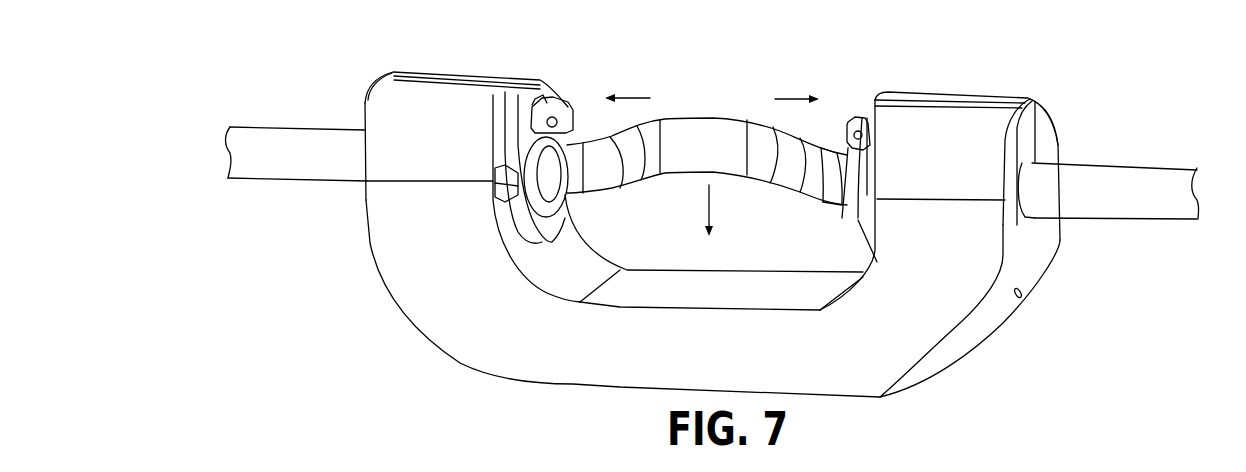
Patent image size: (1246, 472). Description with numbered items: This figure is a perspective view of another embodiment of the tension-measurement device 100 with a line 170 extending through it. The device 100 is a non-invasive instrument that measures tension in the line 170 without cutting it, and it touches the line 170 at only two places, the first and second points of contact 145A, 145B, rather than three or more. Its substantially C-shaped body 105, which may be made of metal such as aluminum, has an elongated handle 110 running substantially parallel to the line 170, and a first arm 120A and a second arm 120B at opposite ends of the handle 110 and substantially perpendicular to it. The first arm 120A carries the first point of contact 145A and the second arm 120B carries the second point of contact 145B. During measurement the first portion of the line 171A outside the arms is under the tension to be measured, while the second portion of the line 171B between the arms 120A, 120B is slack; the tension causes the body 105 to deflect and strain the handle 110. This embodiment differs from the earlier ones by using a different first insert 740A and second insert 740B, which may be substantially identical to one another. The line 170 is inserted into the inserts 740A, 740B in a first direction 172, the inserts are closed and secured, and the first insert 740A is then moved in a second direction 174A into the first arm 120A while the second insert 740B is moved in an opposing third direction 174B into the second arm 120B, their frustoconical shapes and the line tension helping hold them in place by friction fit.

The tension-measurement device 100 is at (300, 27).
The body 105 is at (677, 218).
The handle 110 is at (573, 368).
The first arm 120A is at (385, 222).
The second arm 120B is at (967, 316).
The first point of contact 145A is at (360, 96).
The second point of contact 145B is at (1076, 139).
The line 170 is at (242, 137).
The first portion of the line 171A is at (302, 141).
The second portion of the line 171B is at (694, 130).
The first direction 172 is at (713, 207).
The second direction 174A is at (637, 97).
The third direction 174B is at (793, 97).
The first insert 740A is at (578, 91).
The second insert 740B is at (842, 111).